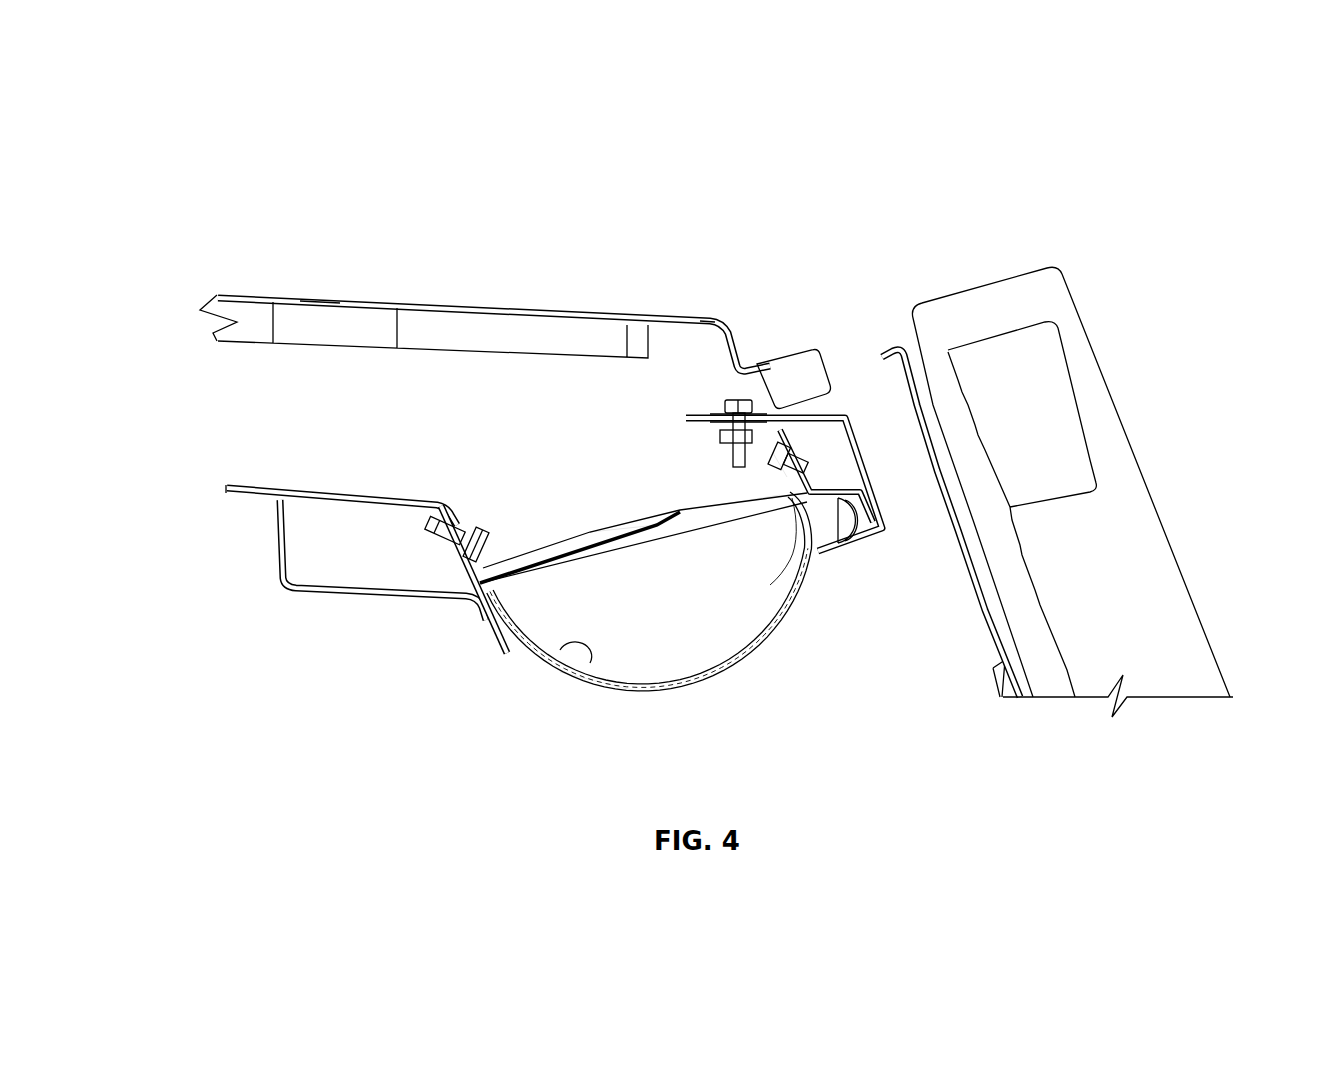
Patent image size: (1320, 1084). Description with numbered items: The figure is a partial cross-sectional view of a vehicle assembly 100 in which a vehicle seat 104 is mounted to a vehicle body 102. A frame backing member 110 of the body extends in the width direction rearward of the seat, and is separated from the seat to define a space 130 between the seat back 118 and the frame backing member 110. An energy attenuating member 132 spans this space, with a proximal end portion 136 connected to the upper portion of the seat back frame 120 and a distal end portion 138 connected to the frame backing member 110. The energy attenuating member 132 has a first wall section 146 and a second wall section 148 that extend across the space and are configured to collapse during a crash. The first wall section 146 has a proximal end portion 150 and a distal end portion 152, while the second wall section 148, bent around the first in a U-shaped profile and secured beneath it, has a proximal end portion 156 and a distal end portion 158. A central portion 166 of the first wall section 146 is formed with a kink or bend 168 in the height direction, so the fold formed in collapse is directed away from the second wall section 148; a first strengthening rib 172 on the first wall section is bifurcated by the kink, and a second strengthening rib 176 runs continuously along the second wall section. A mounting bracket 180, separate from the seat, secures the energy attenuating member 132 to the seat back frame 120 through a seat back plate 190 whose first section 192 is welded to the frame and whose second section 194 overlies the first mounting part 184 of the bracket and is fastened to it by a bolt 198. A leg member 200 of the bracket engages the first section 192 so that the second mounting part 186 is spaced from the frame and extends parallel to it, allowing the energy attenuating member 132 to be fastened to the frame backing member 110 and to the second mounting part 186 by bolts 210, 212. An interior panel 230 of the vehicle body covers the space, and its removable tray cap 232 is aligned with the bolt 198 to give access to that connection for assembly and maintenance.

The vehicle assembly 100 is at (240, 176).
The vehicle body 102 is at (222, 541).
The vehicle seat 104 is at (1186, 464).
The frame backing member 110 is at (332, 590).
The seat back 118 is at (1125, 562).
The seat back frame 120 is at (900, 348).
The space 130 is at (519, 390).
The energy attenuating member 132 is at (655, 694).
The proximal end portion 136 is at (808, 570).
The distal end portion 138 is at (480, 562).
The first wall section 146 is at (550, 566).
The second wall section 148 is at (595, 683).
The proximal end portion of the first wall section 150 is at (790, 487).
The distal end portion of the first wall section 152 is at (497, 560).
The proximal end portion of the second wall section 156 is at (848, 545).
The distal end portion of the second wall section 158 is at (490, 630).
The central portion 166 is at (660, 525).
The kink or bend 168 is at (640, 525).
The first strengthening rib 172 is at (740, 508).
The second strengthening rib 176 is at (567, 650).
The mounting bracket 180 is at (843, 477).
The first mounting part 184 is at (736, 398).
The second mounting part 186 is at (822, 414).
The seat back plate 190 is at (830, 517).
The first section 192 is at (830, 495).
The second section 194 is at (840, 357).
The bolt 198 is at (698, 452).
The leg member 200 is at (890, 548).
The bolt 210 is at (433, 503).
The bolt 212 is at (815, 455).
The interior panel 230 is at (318, 296).
The removable tray cap 232 is at (673, 313).